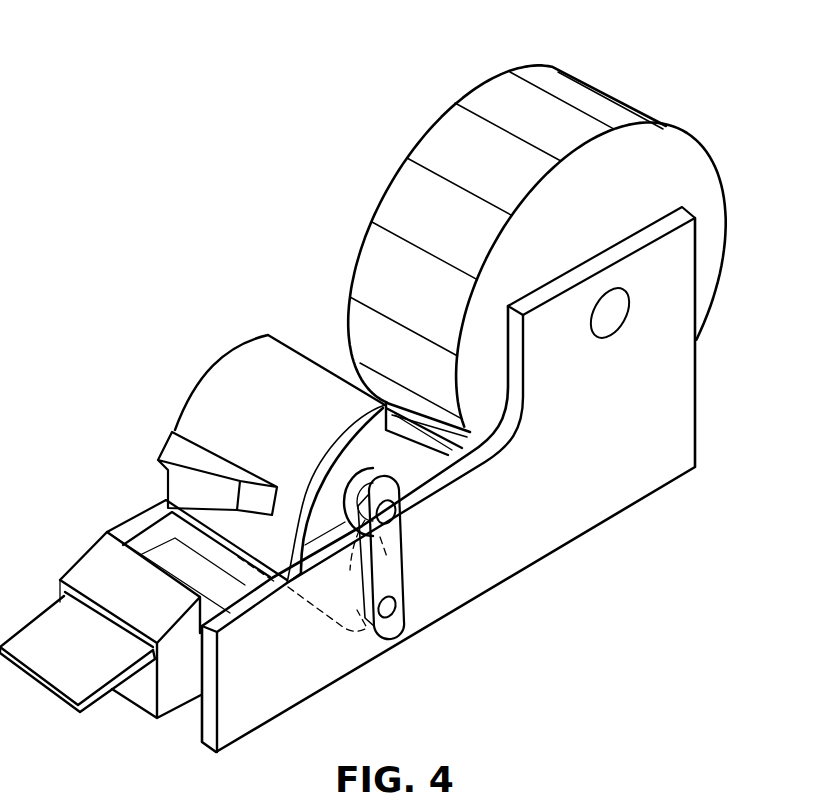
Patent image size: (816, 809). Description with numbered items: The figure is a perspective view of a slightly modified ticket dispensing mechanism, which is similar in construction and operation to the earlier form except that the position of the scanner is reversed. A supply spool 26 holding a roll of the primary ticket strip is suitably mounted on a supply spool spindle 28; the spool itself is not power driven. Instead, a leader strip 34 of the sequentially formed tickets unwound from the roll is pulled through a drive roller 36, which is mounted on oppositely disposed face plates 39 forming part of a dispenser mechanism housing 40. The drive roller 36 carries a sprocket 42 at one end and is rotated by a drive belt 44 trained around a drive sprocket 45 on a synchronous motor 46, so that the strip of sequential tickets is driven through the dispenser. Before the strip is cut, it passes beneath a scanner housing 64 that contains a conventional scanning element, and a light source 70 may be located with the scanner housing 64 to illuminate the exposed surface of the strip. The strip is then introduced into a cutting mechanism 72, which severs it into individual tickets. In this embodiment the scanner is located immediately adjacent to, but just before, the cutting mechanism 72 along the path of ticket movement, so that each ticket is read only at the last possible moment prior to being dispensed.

The supply spool 26 is at (683, 160).
The supply spool spindle 28 is at (617, 322).
The leader strip 34 is at (420, 460).
The drive roller 36 is at (347, 467).
The face plates 39 is at (538, 530).
The dispenser mechanism housing 40 is at (668, 501).
The sprocket 42 is at (393, 517).
The drive belt 44 is at (402, 558).
The drive sprocket 45 is at (392, 625).
The synchronous motor 46 is at (343, 630).
The scanner housing 64 is at (228, 368).
The light source 70 is at (174, 432).
The cutting mechanism 72 is at (130, 737).